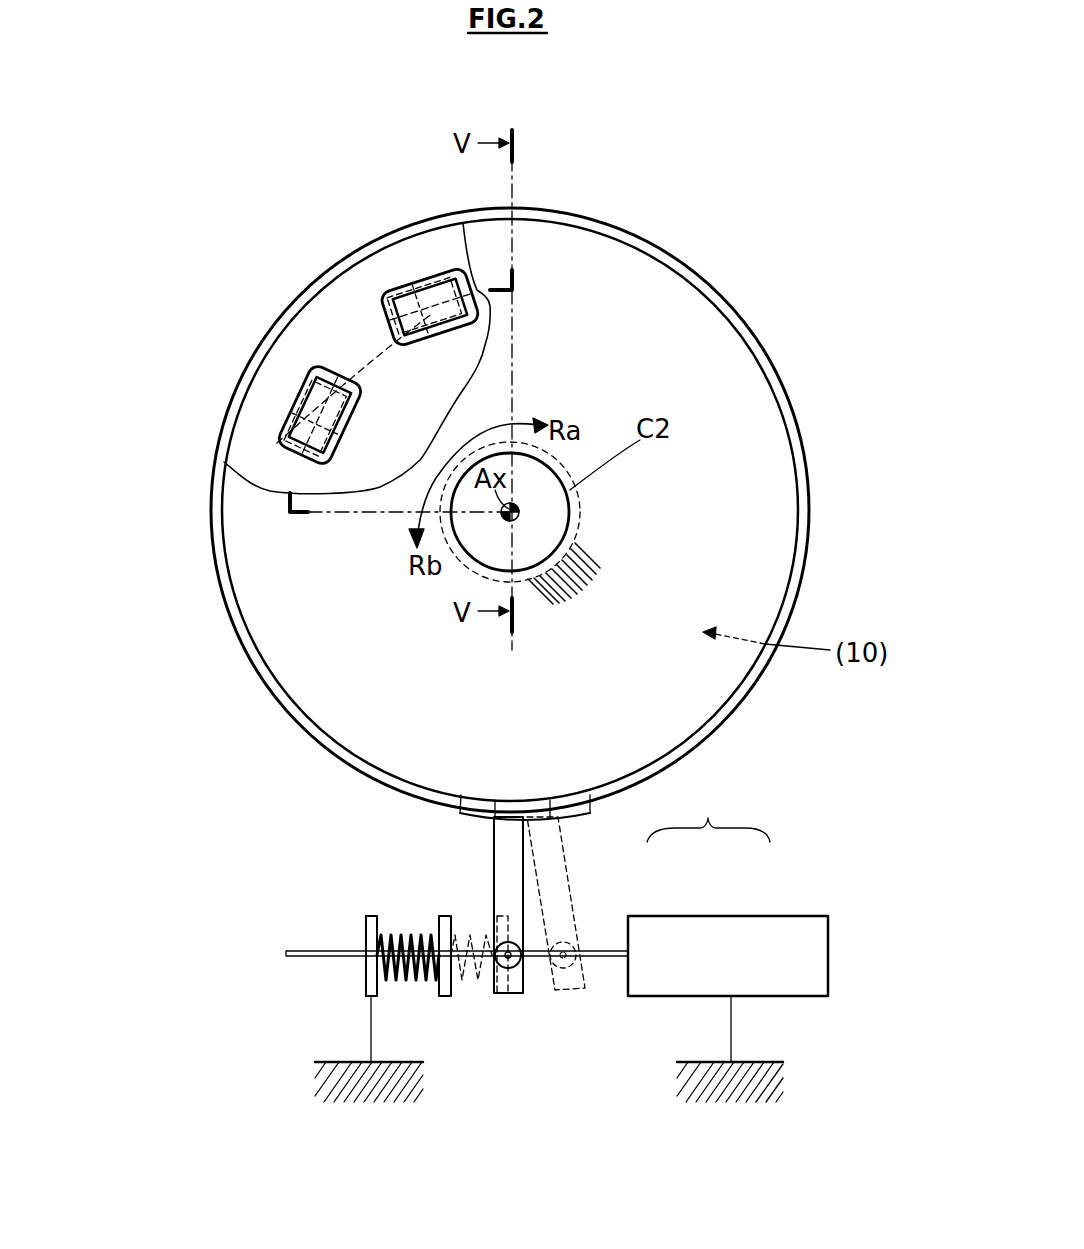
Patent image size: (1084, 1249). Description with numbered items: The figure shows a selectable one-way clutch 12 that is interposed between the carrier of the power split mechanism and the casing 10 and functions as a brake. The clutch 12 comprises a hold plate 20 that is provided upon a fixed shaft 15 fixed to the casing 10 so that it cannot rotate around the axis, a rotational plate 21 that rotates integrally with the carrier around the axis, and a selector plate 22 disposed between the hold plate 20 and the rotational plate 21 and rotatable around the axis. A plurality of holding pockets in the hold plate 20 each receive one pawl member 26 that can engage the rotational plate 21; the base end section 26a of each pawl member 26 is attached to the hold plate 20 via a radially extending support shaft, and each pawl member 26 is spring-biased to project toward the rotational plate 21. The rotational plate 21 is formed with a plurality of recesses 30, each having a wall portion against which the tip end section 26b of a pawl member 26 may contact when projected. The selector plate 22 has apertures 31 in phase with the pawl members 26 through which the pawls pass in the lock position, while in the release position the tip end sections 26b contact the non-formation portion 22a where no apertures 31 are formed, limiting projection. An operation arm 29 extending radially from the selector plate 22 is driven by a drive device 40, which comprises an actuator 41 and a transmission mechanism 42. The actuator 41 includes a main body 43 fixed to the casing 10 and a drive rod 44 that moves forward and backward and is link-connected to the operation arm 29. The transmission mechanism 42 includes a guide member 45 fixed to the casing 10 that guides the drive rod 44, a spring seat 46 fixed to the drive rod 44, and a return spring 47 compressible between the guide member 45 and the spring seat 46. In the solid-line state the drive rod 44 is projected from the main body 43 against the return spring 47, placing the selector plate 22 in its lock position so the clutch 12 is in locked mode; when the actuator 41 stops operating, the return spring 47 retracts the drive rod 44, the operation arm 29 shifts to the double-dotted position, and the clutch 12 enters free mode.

The casing 10 is at (345, 1062).
The selectable one-way clutch 12 is at (688, 167).
The fixed shaft 15 is at (578, 515).
The hold plate 20 is at (745, 312).
The rotational plate 21 is at (752, 433).
The selector plate 22 is at (333, 307).
The non-formation portion 22a is at (333, 353).
The pawl member 26 is at (430, 300).
The base end section 26a is at (455, 293).
The tip end section 26b is at (393, 297).
The operation arm 29 is at (540, 857).
The recess 30 is at (282, 432).
The aperture 31 is at (423, 297).
The drive device 40 is at (708, 814).
The actuator 41 is at (718, 920).
The transmission mechanism 42 is at (605, 920).
The main body 43 is at (828, 956).
The drive rod 44 is at (606, 958).
The guide member 45 is at (376, 920).
The spring seat 46 is at (500, 916).
The return spring 47 is at (480, 972).